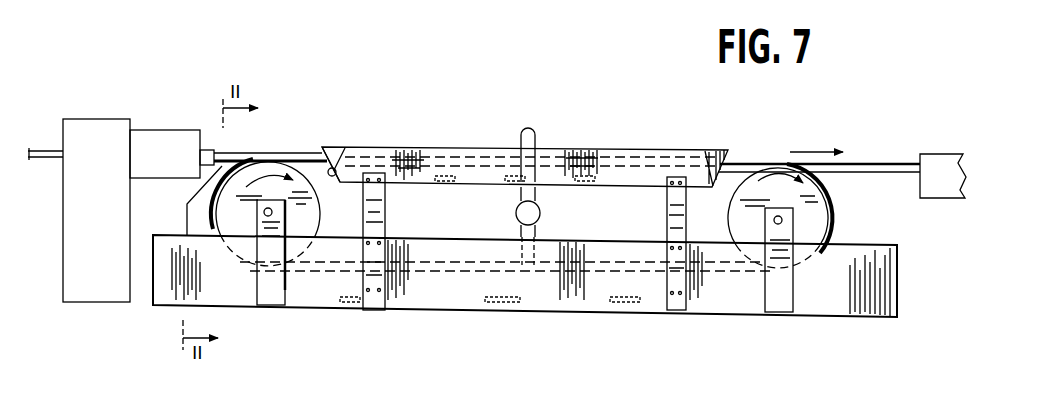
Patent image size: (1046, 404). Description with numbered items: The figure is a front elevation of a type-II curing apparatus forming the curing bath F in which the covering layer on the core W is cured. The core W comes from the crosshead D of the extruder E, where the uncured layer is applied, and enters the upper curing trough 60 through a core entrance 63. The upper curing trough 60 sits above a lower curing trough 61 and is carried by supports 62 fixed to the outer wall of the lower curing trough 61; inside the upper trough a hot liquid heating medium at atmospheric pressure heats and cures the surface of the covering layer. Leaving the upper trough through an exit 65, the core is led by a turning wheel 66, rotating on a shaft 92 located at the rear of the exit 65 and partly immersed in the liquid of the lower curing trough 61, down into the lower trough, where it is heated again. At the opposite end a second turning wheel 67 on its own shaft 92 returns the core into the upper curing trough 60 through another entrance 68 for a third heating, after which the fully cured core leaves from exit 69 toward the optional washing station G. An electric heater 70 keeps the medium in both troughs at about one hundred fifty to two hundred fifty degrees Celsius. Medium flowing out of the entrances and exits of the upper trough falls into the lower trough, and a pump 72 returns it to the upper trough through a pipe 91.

The upper curing trough 60 is at (626, 149).
The lower curing trough 61 is at (697, 290).
The supports 62 is at (382, 198).
The core entrance 63 is at (318, 158).
The exit 65 is at (722, 163).
The turning wheel 66 is at (812, 218).
The turning wheel 67 is at (235, 213).
The entrance 68 is at (348, 166).
The exit 69 is at (712, 150).
The electric heater 70 is at (342, 306).
The pump 72 is at (516, 214).
The pipe 91 is at (522, 133).
The shaft 92 is at (274, 212).
The extruder E is at (113, 140).
The crosshead D is at (181, 140).
The core W is at (245, 143).
The curing bath F is at (553, 124).
The washing station G is at (933, 158).